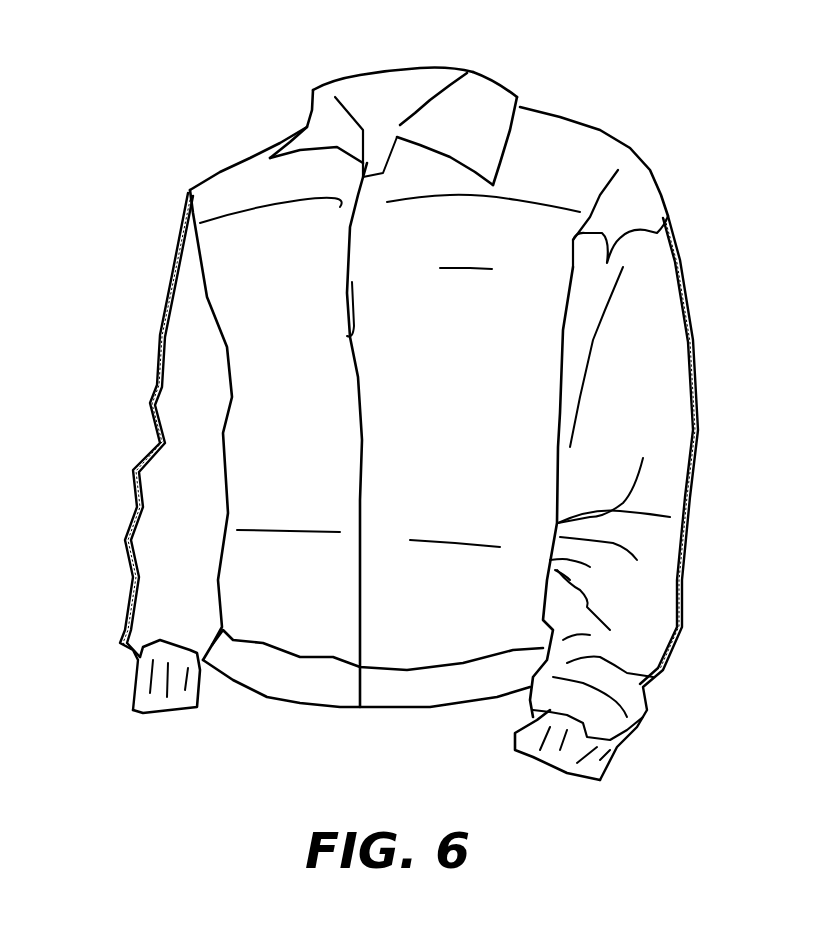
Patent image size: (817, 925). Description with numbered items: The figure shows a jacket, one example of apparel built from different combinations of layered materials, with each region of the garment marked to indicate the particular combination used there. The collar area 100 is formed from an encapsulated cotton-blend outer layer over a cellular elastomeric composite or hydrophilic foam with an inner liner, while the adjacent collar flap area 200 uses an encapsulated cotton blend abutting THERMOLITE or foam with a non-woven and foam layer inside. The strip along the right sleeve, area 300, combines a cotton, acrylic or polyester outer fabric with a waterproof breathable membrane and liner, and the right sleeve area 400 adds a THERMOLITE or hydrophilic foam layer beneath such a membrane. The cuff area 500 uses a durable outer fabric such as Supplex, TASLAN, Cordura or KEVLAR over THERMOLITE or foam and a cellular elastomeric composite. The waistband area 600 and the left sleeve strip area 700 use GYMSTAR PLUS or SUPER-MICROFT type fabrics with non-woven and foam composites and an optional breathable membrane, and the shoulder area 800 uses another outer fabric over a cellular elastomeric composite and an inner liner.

The apparel area 100 is at (392, 95).
The apparel area 200 is at (483, 105).
The apparel area 300 is at (692, 310).
The apparel area 400 is at (643, 427).
The apparel area 500 is at (603, 763).
The apparel area 600 is at (313, 687).
The apparel area 700 is at (233, 313).
The apparel area 800 is at (247, 187).